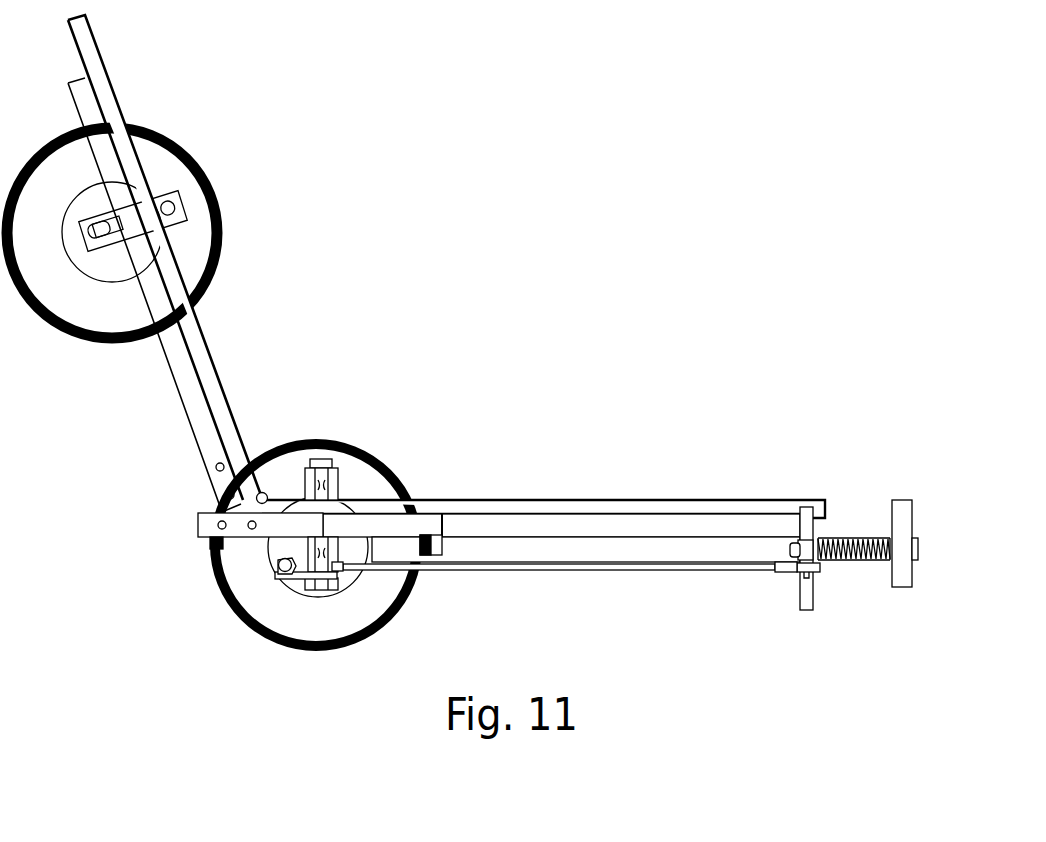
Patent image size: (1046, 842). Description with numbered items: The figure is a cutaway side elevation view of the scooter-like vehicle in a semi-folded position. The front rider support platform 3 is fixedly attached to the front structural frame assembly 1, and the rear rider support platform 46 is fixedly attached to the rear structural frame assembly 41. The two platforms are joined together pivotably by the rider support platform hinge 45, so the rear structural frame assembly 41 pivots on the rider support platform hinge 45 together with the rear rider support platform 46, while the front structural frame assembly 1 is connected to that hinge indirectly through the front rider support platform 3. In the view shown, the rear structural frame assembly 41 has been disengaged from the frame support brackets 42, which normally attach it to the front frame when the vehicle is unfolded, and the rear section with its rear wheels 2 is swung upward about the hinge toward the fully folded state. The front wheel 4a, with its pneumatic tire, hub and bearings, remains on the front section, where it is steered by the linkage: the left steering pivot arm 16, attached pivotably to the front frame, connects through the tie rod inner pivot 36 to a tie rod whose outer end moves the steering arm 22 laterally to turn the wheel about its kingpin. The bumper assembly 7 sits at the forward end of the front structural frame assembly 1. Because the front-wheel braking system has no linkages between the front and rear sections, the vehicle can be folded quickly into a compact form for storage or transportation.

The front structural frame assembly 1 is at (582, 528).
The rear wheels 2 is at (197, 232).
The front rider support platform 3 is at (635, 505).
The front wheel 4a is at (395, 462).
The bumper assembly 7 is at (898, 505).
The left steering pivot arm 16 is at (314, 578).
The left steering arm 22 is at (283, 576).
The left tie rod inner pivot 36 is at (290, 580).
The rear structural frame assembly 41 is at (200, 412).
The frame support brackets 42 is at (207, 527).
The rider support platform hinge 45 is at (265, 492).
The rear rider support platform 46 is at (202, 362).